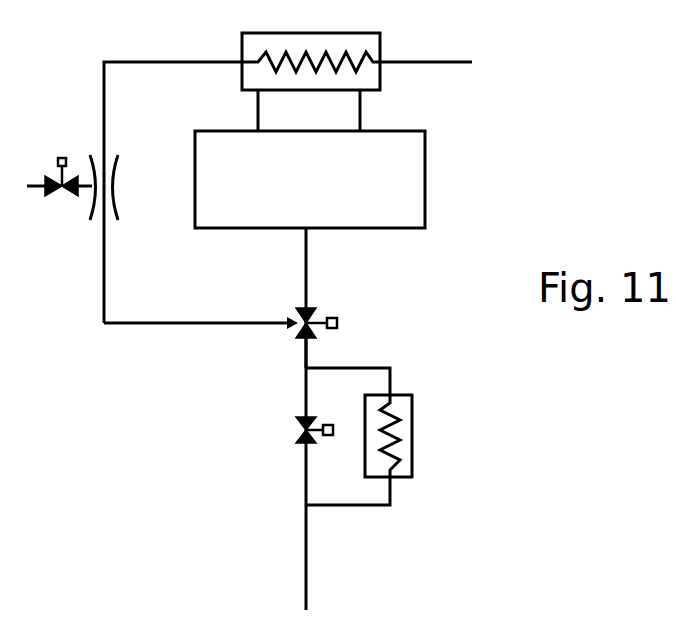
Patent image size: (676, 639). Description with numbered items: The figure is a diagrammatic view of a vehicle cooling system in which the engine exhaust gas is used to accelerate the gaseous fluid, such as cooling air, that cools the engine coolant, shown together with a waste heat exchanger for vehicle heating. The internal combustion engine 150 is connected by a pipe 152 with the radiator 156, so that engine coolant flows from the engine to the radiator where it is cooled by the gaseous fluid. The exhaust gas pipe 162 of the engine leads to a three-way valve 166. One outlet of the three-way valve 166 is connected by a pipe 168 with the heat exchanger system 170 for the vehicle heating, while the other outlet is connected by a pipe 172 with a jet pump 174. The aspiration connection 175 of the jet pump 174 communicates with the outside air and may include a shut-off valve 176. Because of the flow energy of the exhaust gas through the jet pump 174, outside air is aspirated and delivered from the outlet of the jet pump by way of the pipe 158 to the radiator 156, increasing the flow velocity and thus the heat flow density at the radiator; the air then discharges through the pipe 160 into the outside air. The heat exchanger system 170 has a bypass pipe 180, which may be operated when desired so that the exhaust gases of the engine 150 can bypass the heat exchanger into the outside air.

The internal combustion engine 150 is at (427, 210).
The pipe 152 is at (262, 108).
The radiator 156 is at (372, 33).
The pipe 158 is at (152, 58).
The pipe 160 is at (462, 62).
The exhaust gas pipe 162 is at (310, 262).
The three-way valve 166 is at (312, 311).
The pipe 168 is at (303, 347).
The heat exchanger system 170 is at (401, 352).
The pipe 172 is at (133, 320).
The jet pump 174 is at (114, 193).
The aspiration connection 175 is at (32, 190).
The shut-off valve 176 is at (62, 157).
The bypass pipe 180 is at (303, 470).